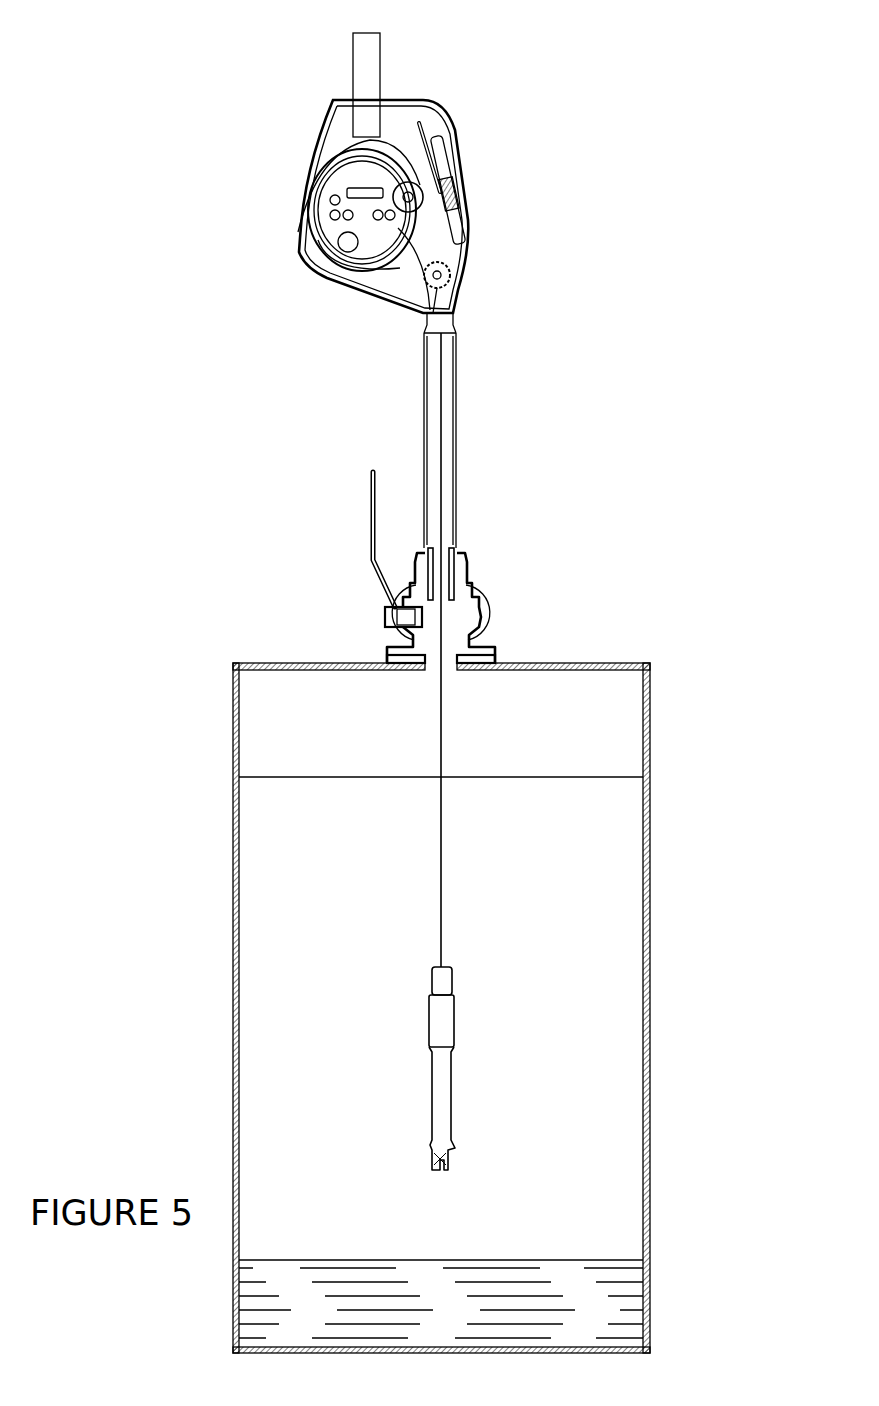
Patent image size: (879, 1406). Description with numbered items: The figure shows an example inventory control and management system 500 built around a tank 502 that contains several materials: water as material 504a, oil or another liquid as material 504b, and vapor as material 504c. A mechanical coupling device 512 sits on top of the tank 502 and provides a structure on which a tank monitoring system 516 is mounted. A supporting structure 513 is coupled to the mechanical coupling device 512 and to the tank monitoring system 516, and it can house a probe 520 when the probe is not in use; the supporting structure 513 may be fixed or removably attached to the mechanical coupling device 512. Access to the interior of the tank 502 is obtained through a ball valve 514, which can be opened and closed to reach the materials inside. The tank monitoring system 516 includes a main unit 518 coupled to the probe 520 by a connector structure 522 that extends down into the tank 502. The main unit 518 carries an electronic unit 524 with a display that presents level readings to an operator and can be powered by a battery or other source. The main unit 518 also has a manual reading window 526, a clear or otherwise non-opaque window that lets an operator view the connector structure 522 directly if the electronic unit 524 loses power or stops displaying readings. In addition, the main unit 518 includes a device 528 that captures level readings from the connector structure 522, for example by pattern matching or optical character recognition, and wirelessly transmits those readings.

The inventory control and management system 500 is at (722, 45).
The tank 502 is at (603, 657).
The material 504a is at (623, 1311).
The material 504b is at (615, 1187).
The material 504c is at (607, 728).
The mechanical coupling device 512 is at (478, 545).
The supporting structure 513 is at (461, 416).
The ball valve 514 is at (469, 622).
The tank monitoring system 516 is at (439, 78).
The main unit 518 is at (320, 283).
The probe 520 is at (458, 1096).
The connector structure 522 is at (446, 907).
The electronic unit 524 is at (327, 228).
The manual reading window 526 is at (458, 197).
The device 528 is at (348, 83).